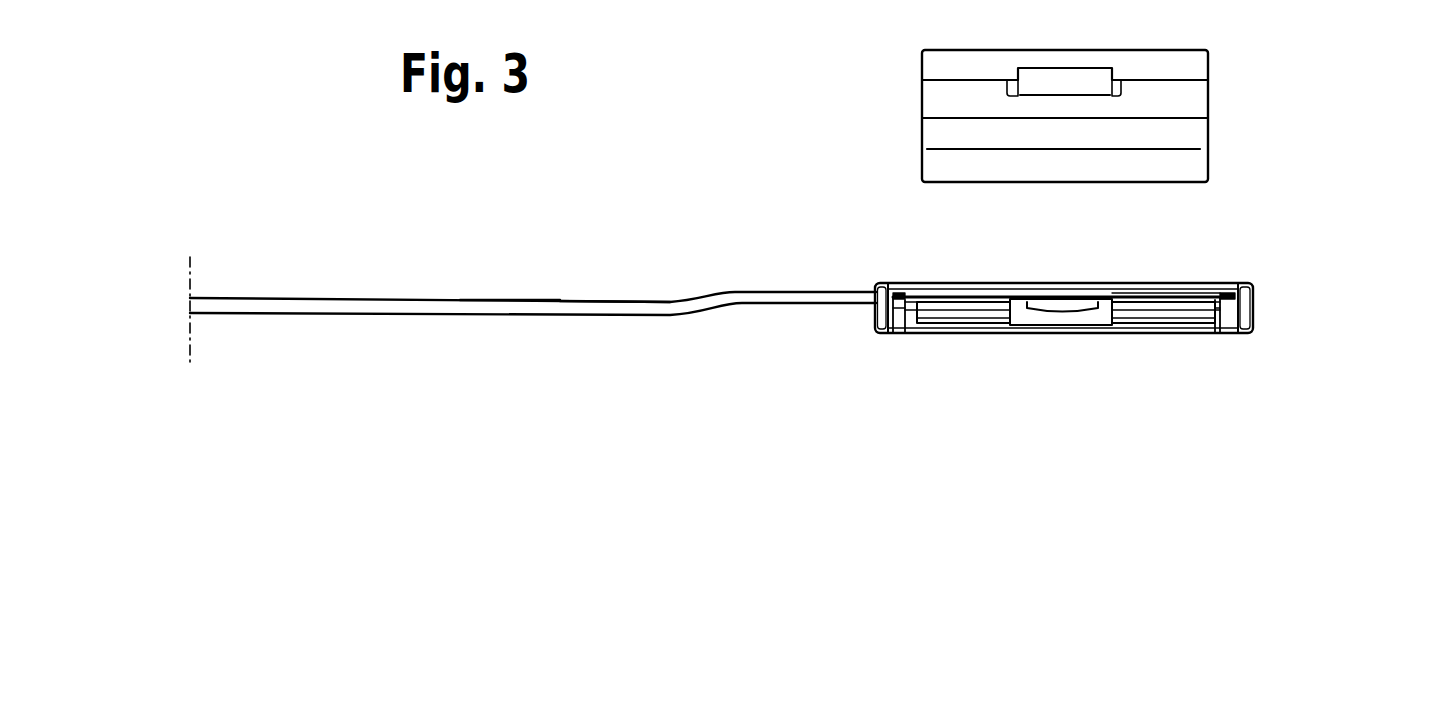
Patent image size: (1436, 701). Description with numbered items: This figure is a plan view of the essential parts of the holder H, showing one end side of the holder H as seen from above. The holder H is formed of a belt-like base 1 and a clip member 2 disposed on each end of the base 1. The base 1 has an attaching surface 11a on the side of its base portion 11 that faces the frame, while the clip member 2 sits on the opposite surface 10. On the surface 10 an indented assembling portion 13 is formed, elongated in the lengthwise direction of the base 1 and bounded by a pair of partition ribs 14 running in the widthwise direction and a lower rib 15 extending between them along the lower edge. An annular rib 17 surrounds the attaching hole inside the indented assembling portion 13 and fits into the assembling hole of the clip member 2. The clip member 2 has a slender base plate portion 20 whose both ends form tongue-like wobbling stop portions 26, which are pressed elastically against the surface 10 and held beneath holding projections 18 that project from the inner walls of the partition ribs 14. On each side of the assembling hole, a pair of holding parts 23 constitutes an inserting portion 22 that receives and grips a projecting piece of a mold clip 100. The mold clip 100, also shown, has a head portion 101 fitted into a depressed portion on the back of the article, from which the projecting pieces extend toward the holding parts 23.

The base 1 is at (413, 315).
The holder H is at (543, 315).
The surface 10 is at (625, 315).
The base portion 11 is at (1152, 275).
The attaching surface 11a is at (1207, 284).
The partition ribs 14 is at (872, 327).
The holding projections 18 is at (897, 332).
The inserting portion 22 is at (970, 327).
The holding parts 23 is at (945, 300).
The wobbling stop portions 26 is at (882, 288).
The clip member 2 is at (1201, 251).
The base plate portion 20 is at (1155, 298).
The indented assembling portion 13 is at (1053, 393).
The lower rib 15 is at (1068, 327).
The annular rib 17 is at (1083, 300).
The mold clip 100 is at (1192, 129).
The head portion 101 is at (1190, 139).